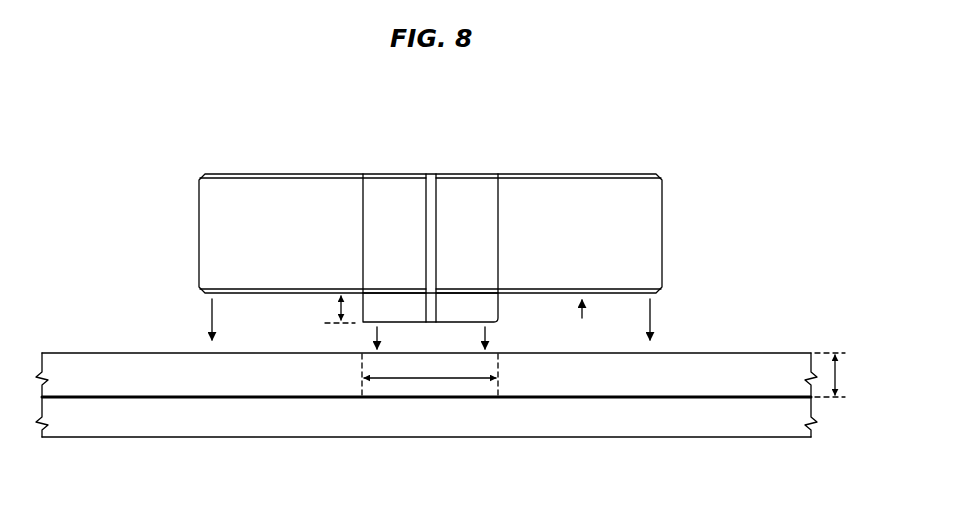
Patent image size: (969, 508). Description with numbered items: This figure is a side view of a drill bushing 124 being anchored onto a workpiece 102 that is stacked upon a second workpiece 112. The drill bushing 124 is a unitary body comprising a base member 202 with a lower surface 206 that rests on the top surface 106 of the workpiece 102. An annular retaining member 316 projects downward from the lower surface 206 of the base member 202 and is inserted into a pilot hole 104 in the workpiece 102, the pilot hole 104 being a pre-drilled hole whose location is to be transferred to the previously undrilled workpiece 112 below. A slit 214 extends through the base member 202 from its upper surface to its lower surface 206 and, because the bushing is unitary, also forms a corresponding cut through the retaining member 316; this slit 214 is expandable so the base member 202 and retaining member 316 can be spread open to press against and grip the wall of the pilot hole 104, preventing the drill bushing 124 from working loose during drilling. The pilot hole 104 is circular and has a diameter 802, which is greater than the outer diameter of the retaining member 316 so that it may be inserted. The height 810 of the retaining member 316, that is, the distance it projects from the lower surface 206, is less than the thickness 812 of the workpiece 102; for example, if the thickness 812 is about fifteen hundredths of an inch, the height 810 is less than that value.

The drill bushing 124 is at (225, 152).
The base member 202 is at (663, 217).
The slit 214 is at (431, 171).
The retaining member 316 is at (486, 312).
The lower surface 206 is at (582, 318).
The height 810 is at (340, 310).
The diameter 802 is at (437, 380).
The thickness 812 is at (845, 375).
The workpiece 102 is at (426, 385).
The top surface 106 is at (145, 349).
The pilot hole 104 is at (392, 362).
The workpiece 112 is at (110, 420).